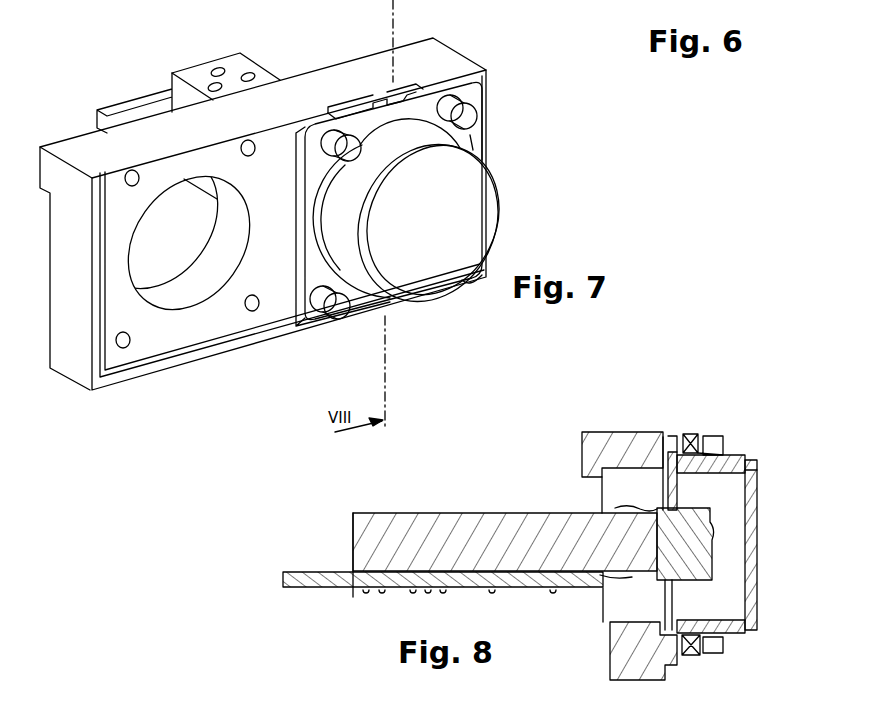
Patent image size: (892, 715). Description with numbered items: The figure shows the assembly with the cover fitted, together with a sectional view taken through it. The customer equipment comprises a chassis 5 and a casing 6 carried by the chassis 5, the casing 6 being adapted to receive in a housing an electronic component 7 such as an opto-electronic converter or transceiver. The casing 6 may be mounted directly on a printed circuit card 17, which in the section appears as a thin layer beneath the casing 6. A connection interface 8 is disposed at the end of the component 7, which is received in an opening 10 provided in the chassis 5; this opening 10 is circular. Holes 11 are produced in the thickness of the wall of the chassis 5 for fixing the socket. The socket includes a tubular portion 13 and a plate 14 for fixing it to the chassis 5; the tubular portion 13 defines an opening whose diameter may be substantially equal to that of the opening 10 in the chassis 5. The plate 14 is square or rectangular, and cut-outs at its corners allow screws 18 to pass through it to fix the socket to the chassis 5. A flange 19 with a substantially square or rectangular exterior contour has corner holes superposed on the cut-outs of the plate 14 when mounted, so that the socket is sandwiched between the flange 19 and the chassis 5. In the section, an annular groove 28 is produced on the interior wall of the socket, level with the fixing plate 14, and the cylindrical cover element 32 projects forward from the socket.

In FIG. 7, the chassis 5 is at (158, 330).
In FIG. 8, the chassis 5 is at (622, 446).
In FIG. 7, the casing 6 is at (200, 76).
In FIG. 8, the casing 6 is at (432, 513).
In FIG. 8, the electronic component 7 is at (497, 545).
In FIG. 8, the connection interface 8 is at (697, 555).
In FIG. 7, the opening 10 is at (165, 277).
In FIG. 7, the holes 11 is at (133, 171).
In FIG. 7, the tubular portion 13 is at (342, 228).
In FIG. 8, the tubular portion 13 is at (735, 461).
In FIG. 7, the plate 14 is at (385, 108).
In FIG. 8, the plate 14 is at (687, 433).
In FIG. 8, the printed circuit card 17 is at (521, 582).
In FIG. 7, the screws 18 is at (330, 316).
In FIG. 8, the screws 18 is at (712, 440).
In FIG. 7, the flange 19 is at (472, 142).
In FIG. 8, the flange 19 is at (687, 657).
In FIG. 8, the annular groove 28 is at (628, 654).
In FIG. 7, the lens barrel 32 is at (465, 200).
In FIG. 8, the lens barrel 32 is at (752, 516).